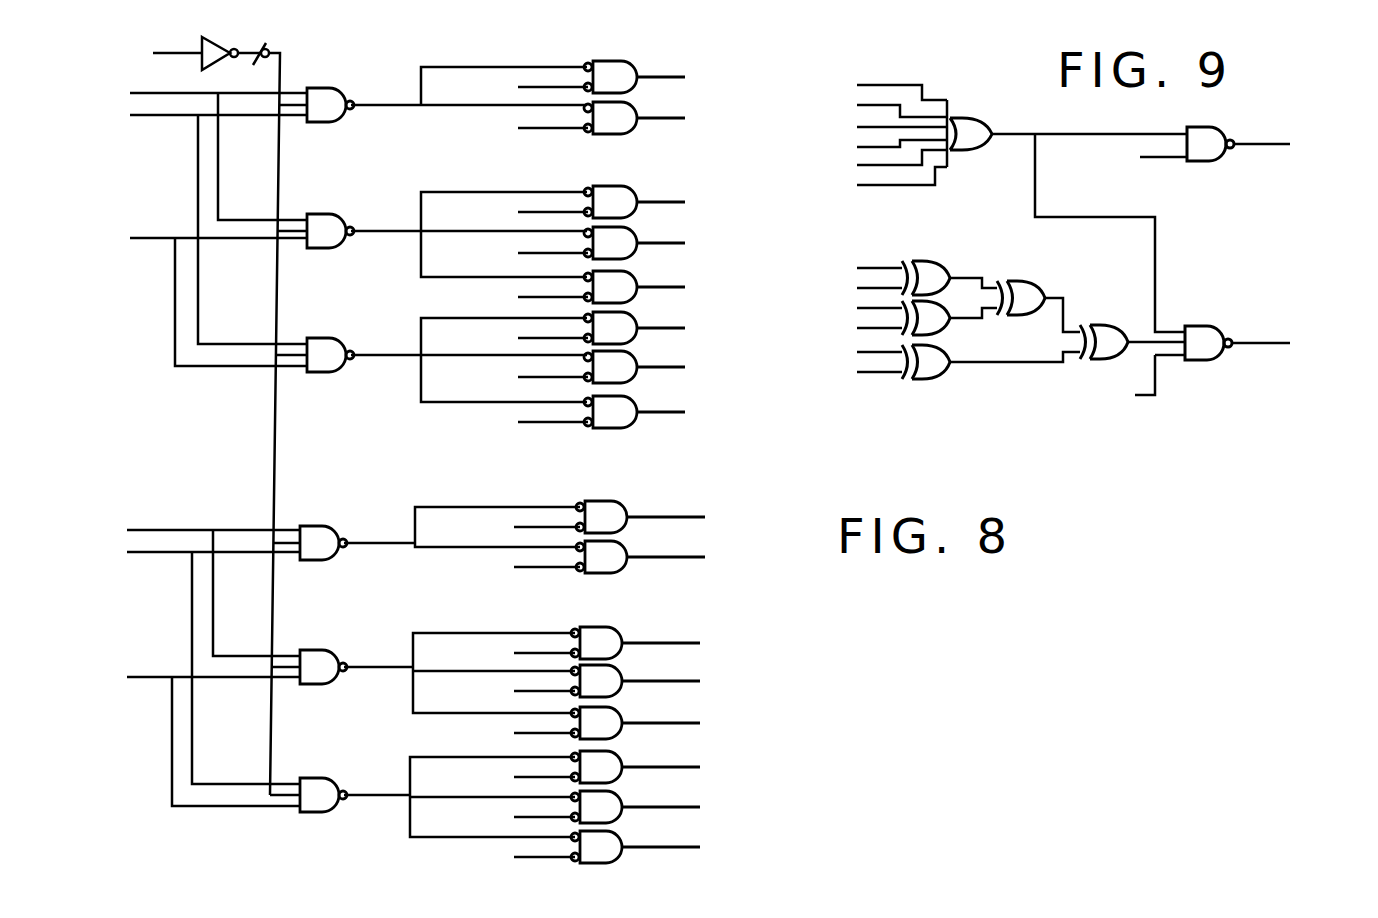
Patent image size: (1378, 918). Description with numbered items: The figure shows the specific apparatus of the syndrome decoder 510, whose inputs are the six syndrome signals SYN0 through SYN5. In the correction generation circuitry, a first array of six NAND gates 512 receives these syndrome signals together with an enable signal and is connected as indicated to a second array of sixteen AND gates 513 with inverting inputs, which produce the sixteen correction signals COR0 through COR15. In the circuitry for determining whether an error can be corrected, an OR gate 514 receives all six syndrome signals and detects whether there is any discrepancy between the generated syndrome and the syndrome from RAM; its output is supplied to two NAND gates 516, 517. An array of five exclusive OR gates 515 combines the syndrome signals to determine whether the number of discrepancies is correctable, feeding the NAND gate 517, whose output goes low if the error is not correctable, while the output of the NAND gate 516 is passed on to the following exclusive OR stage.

In FIG. 8, the syndrome decoder 510 is at (375, 305).
In FIG. 8, the NAND gates 512 is at (334, 122).
In FIG. 8, the AND gates 513 is at (622, 66).
In FIG. 9, the OR gate 514 is at (970, 128).
In FIG. 9, the exclusive OR gates 515 is at (1011, 280).
In FIG. 9, the NAND gate 516 is at (1212, 161).
In FIG. 9, the NAND gate 517 is at (1215, 360).